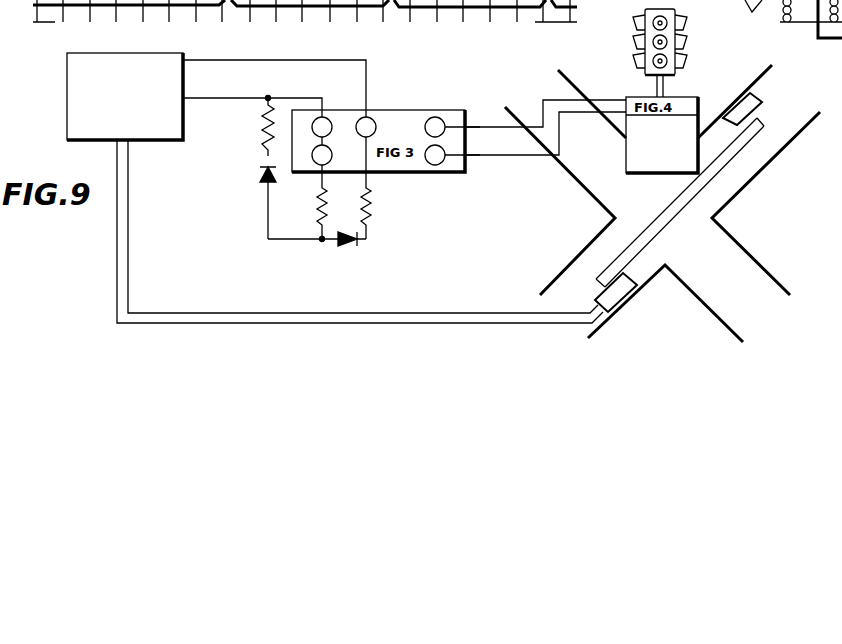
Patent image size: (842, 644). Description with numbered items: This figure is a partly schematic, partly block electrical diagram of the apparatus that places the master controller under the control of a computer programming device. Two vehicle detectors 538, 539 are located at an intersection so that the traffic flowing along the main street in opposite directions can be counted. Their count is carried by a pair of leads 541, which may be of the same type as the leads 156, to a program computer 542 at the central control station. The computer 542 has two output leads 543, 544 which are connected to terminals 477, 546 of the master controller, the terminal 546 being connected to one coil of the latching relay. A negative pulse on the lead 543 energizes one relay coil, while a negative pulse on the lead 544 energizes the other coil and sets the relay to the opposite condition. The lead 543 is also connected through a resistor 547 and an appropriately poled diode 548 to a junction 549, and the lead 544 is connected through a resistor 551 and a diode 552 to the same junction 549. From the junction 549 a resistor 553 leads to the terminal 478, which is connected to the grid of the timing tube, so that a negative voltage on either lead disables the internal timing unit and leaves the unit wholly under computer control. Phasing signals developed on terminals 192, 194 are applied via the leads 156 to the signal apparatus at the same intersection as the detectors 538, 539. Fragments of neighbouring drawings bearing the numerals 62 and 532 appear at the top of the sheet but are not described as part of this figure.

The conductor 62 is at (9, 20).
The relay coil 532 is at (830, 53).
The program computer 542 is at (170, 131).
The output lead 543 is at (246, 98).
The output lead 544 is at (278, 58).
The resistor 547 is at (268, 146).
The diode 548 is at (261, 188).
The junction 549 is at (320, 242).
The resistor 551 is at (372, 220).
The diode 552 is at (347, 246).
The resistor 553 is at (312, 220).
The terminal 477 is at (357, 105).
The terminal 478 is at (332, 152).
The terminal 546 is at (376, 129).
The terminal 192 is at (458, 116).
The terminal 194 is at (428, 164).
The leads 156 is at (528, 149).
The pair of leads 541 is at (382, 312).
The vehicle detector 538 is at (622, 286).
The vehicle detector 539 is at (758, 104).